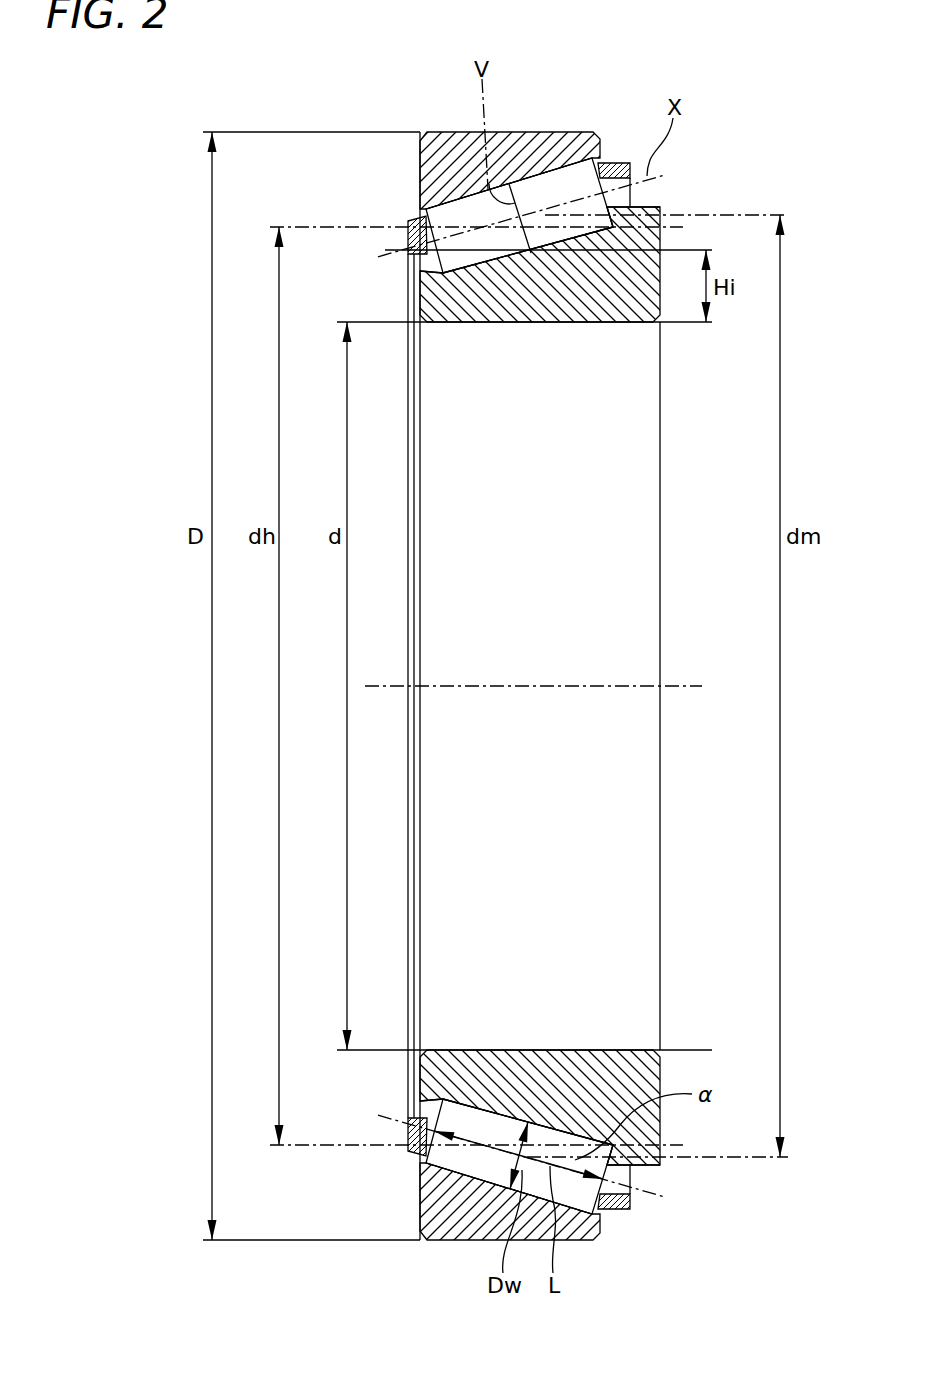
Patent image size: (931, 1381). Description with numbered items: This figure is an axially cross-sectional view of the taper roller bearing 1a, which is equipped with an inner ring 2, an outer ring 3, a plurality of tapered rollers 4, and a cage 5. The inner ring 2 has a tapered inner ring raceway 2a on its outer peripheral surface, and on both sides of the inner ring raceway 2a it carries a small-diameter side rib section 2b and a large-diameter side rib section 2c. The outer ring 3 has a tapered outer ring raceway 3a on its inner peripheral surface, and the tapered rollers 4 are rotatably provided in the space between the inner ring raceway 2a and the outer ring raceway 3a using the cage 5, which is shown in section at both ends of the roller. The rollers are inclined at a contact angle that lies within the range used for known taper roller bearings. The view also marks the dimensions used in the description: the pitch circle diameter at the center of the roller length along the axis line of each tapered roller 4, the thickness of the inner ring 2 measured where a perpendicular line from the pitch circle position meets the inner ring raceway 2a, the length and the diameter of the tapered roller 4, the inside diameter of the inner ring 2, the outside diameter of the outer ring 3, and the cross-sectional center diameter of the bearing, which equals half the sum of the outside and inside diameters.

The taper roller bearing 1a is at (593, 83).
The inner ring 2 is at (572, 1062).
The inner ring raceway 2a is at (502, 1116).
The small-diameter side rib section 2b is at (430, 1075).
The large-diameter side rib section 2c is at (643, 1152).
The outer ring 3 is at (448, 1241).
The outer ring raceway 3a is at (574, 1205).
The tapered roller 4 is at (477, 1165).
The cage 5 is at (613, 1211).